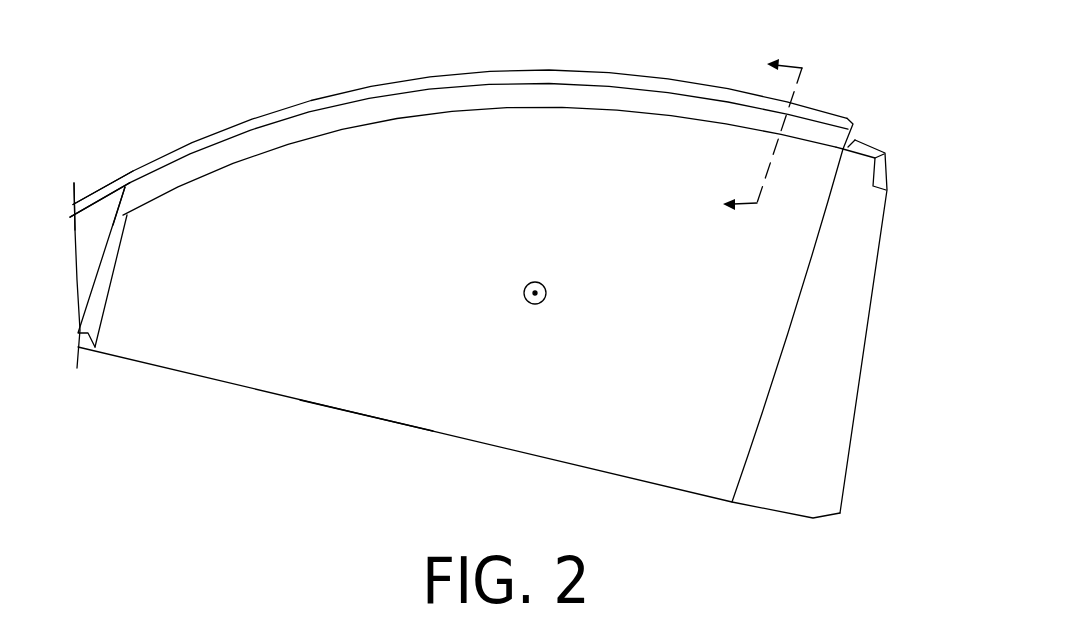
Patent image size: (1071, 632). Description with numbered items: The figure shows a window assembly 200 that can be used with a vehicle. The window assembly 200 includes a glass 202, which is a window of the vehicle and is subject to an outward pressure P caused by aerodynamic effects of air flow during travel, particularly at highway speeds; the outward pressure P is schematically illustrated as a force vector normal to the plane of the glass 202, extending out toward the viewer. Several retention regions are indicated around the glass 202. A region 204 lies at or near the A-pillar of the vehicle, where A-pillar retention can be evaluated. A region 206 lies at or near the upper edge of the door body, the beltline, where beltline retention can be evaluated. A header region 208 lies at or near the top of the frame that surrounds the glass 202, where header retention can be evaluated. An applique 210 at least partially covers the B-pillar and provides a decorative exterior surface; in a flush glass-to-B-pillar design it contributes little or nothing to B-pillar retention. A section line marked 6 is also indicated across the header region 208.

The window assembly 200 is at (486, 261).
The glass 202 is at (652, 460).
The region 204 is at (120, 179).
The region 206 is at (433, 433).
The header region 208 is at (490, 69).
The applique 210 is at (840, 348).
The outward pressure P is at (524, 287).
The section line 6- 6 is at (753, 132).